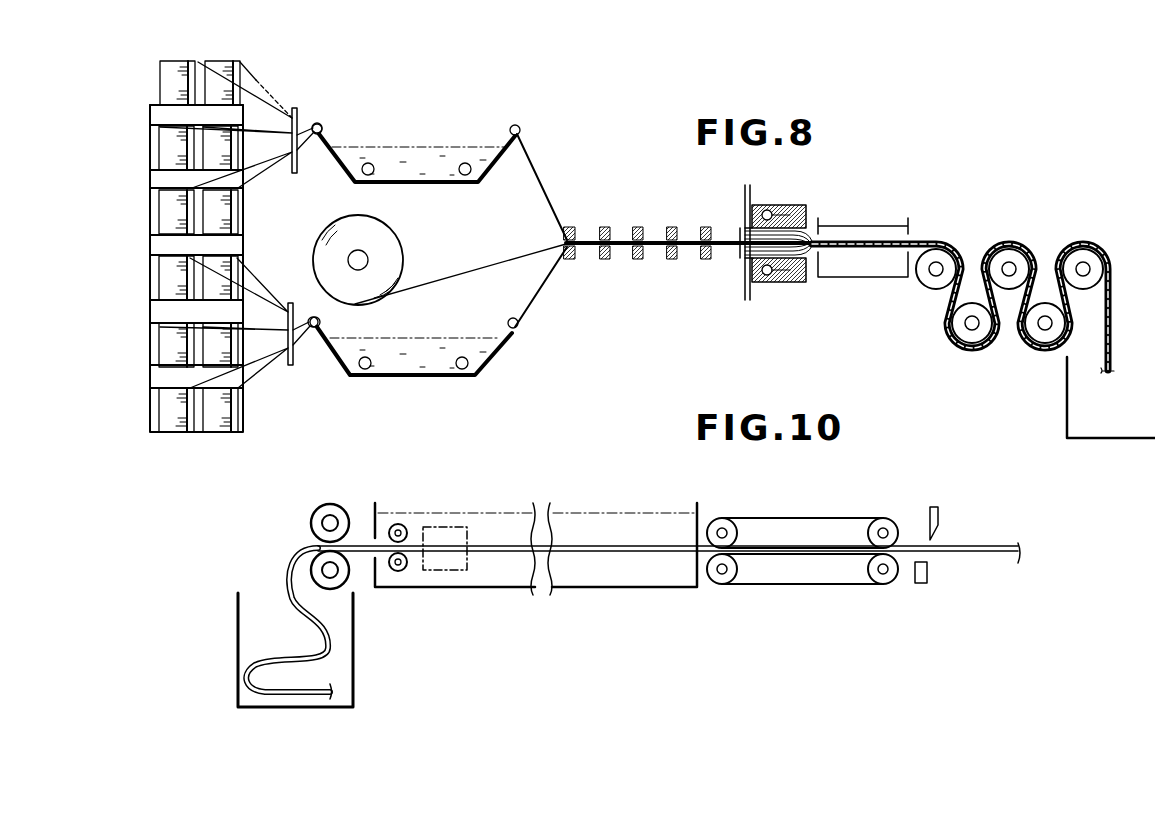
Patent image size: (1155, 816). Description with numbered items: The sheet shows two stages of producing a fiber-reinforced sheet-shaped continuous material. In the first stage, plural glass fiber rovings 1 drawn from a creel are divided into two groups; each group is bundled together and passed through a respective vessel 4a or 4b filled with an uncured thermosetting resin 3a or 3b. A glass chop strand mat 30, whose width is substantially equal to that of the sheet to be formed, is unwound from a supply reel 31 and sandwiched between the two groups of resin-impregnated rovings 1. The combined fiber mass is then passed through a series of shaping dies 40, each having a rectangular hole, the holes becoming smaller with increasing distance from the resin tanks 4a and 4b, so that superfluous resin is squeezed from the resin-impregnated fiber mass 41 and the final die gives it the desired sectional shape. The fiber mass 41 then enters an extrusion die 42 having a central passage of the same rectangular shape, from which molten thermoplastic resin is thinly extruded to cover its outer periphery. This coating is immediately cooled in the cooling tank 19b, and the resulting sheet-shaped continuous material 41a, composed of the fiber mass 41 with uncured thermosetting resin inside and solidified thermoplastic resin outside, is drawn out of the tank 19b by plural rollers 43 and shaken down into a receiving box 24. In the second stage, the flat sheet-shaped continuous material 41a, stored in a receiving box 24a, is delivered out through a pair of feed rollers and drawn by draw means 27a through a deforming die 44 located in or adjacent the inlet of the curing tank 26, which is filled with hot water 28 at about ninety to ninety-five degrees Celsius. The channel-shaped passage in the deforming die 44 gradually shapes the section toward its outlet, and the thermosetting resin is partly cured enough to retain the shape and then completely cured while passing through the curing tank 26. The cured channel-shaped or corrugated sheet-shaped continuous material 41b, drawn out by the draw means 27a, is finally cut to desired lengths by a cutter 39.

In FIG. 8, the glass fiber rovings 1 is at (283, 101).
In FIG. 8, the uncured thermosetting resin 3a is at (395, 158).
In FIG. 8, the vessel 4a is at (490, 176).
In FIG. 8, the uncured thermosetting resin 3b is at (417, 349).
In FIG. 8, the vessel 4b is at (492, 360).
In FIG. 8, the glass chop strand mat 30 is at (479, 277).
In FIG. 8, the core yarn supply reel 31 is at (394, 250).
In FIG. 8, the shaping dies 40 is at (639, 221).
In FIG. 8, the resin-impregnated fiber mass 41 is at (688, 238).
In FIG. 8, the extrusion die 42 is at (789, 239).
In FIG. 8, the cooling tank 19b is at (853, 278).
In FIG. 8, the rollers 43 is at (1008, 258).
In FIG. 8, the sheet-shaped continuous material 41a is at (1111, 306).
In FIG. 10, the sheet-shaped continuous material 41a is at (293, 655).
In FIG. 8, the receiving box 24 is at (1067, 415).
In FIG. 10, the receiving box 24a is at (354, 641).
In FIG. 10, the curing tank 26 is at (375, 505).
In FIG. 10, the deforming die 44 is at (447, 532).
In FIG. 10, the hot water 28 is at (608, 525).
In FIG. 10, the draw means 27a is at (810, 520).
In FIG. 10, the channel-shaped or corrugated sheet-shaped continuous material 41b is at (905, 545).
In FIG. 10, the cutter 39 is at (940, 518).